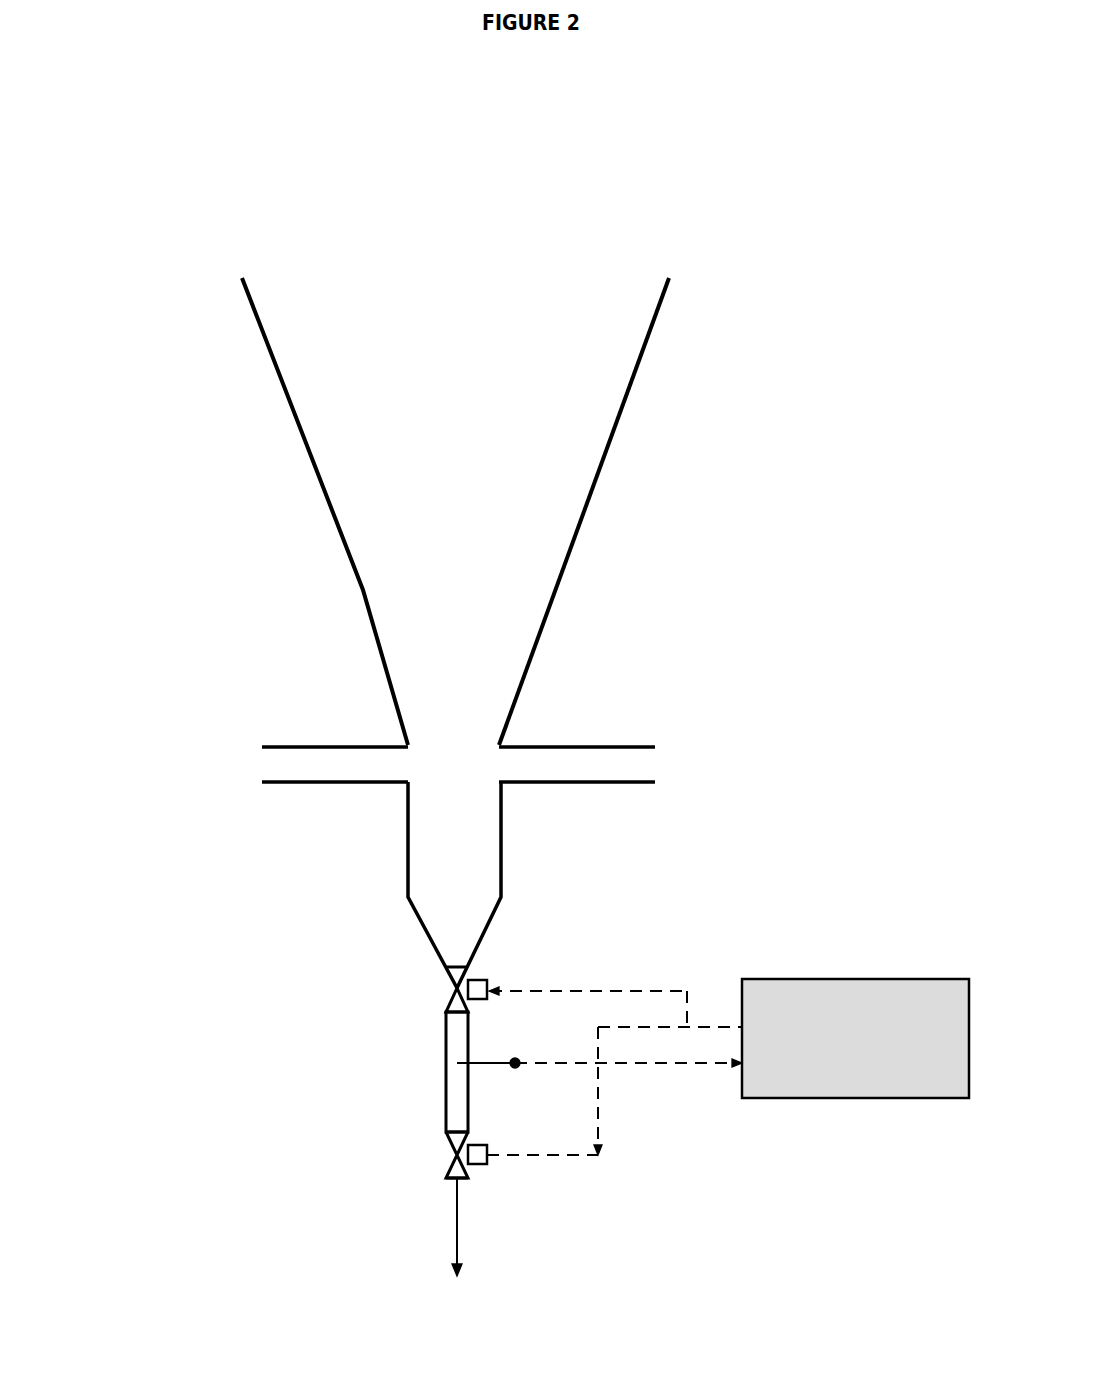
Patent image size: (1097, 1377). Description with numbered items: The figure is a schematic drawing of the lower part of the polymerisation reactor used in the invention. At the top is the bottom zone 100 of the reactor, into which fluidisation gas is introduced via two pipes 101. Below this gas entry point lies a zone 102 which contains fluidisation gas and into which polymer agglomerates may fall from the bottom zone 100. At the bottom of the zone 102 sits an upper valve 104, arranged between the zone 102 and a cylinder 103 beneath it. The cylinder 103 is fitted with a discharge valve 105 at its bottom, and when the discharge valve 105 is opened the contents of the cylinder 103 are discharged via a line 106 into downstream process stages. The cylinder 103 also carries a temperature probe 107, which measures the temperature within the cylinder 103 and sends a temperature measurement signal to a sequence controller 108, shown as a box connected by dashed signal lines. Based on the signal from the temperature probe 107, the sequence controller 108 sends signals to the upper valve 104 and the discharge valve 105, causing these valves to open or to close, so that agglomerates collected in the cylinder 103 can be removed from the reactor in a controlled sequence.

The bottom zone 100 is at (498, 505).
The pipes 101 is at (278, 767).
The zone 102 is at (462, 872).
The cylinder 103 is at (457, 1100).
The upper valve 104 is at (488, 981).
The discharge valve 105 is at (486, 1166).
The line 106 is at (452, 1227).
The temperature probe 107 is at (488, 1063).
The sequence controller 108 is at (830, 1013).